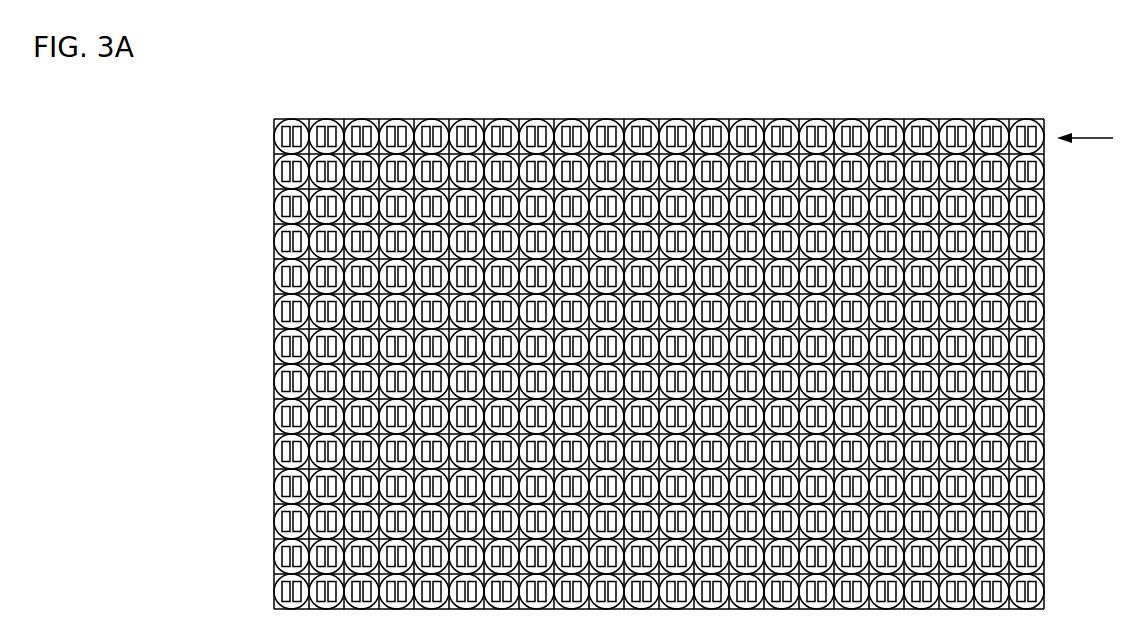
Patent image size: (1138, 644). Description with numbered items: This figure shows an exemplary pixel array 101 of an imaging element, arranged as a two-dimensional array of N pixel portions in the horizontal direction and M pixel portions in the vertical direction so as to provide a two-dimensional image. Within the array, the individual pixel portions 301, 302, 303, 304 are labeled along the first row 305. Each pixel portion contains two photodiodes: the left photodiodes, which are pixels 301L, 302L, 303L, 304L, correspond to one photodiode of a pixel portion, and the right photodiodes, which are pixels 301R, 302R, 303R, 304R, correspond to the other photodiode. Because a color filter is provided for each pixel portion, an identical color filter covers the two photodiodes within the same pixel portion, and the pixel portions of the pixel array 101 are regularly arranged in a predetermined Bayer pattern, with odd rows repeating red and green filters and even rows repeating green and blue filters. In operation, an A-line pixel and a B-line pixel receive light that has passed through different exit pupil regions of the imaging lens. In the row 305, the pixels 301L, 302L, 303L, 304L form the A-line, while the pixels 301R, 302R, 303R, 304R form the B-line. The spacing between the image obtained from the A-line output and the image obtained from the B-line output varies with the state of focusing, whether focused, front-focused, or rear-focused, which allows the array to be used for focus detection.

The pixel array 101 is at (608, 319).
The pixel portion 301 is at (240, 122).
The pixel portion 302 is at (274, 114).
The pixel portion 303 is at (310, 127).
The pixel portion 304 is at (339, 158).
The A-line pixel 301L is at (278, 126).
The B-line pixel 301R is at (297, 128).
The A-line pixel 302L is at (318, 128).
The B-line pixel 302R is at (331, 128).
The A-line pixel 303L is at (352, 128).
The B-line pixel 303R is at (366, 128).
The A-line pixel 304L is at (390, 128).
The B-line pixel 304R is at (404, 128).
The row 305 is at (1085, 152).